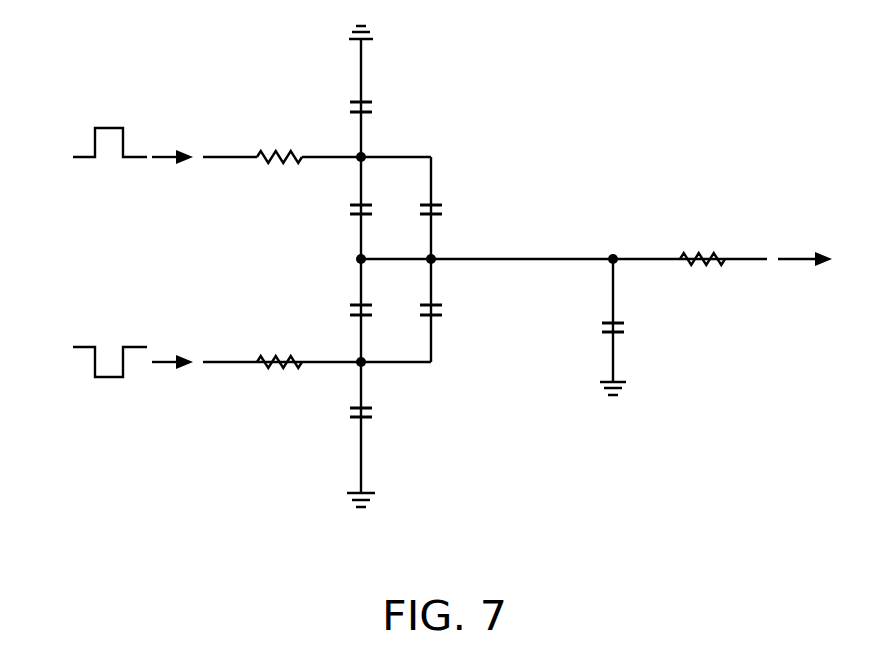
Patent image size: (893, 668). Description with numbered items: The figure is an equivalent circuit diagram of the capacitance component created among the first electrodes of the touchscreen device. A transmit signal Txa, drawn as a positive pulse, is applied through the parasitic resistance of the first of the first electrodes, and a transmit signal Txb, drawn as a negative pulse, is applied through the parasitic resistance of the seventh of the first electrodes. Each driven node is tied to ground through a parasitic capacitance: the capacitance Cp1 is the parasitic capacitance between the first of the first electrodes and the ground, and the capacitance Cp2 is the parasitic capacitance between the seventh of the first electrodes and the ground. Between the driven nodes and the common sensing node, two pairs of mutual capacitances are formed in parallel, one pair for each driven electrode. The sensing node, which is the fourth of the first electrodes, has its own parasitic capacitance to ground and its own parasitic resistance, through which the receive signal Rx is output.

The transmit signal Txa is at (110, 124).
The transmit signal Txb is at (133, 383).
The capacitance Cp1 is at (387, 74).
The capacitance Cp2 is at (386, 452).
The receive signal Rx is at (805, 275).